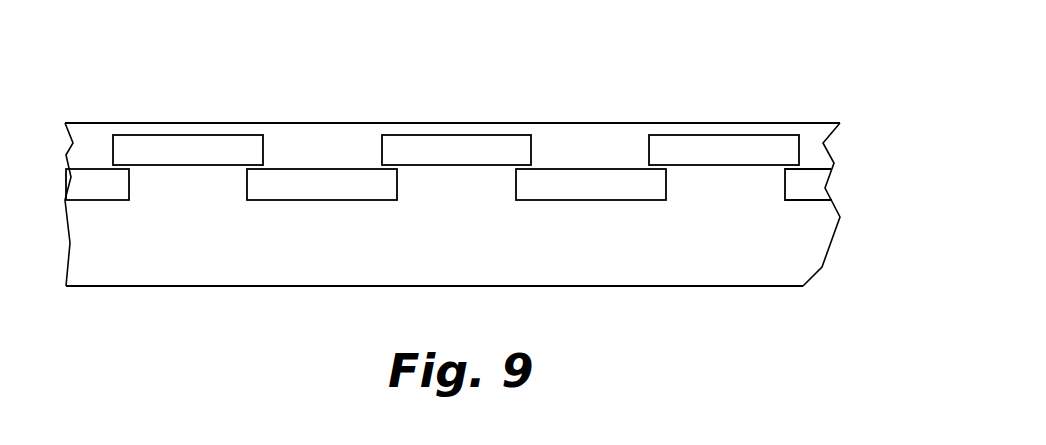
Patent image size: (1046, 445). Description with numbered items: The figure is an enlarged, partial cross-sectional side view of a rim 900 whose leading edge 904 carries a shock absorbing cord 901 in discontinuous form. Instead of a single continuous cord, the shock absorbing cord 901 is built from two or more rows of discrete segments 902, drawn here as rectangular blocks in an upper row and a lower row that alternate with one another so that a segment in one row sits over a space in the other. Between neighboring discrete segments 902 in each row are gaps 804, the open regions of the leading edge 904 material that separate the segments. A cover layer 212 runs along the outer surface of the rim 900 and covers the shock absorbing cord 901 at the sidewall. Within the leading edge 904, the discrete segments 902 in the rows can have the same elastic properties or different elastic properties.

The rim 900 is at (465, 193).
The leading edge 904 is at (630, 122).
The cover layer 212 is at (455, 123).
The gaps 804 is at (304, 136).
The discrete segments 902 is at (403, 147).
The shock absorbing cord 901 is at (516, 153).